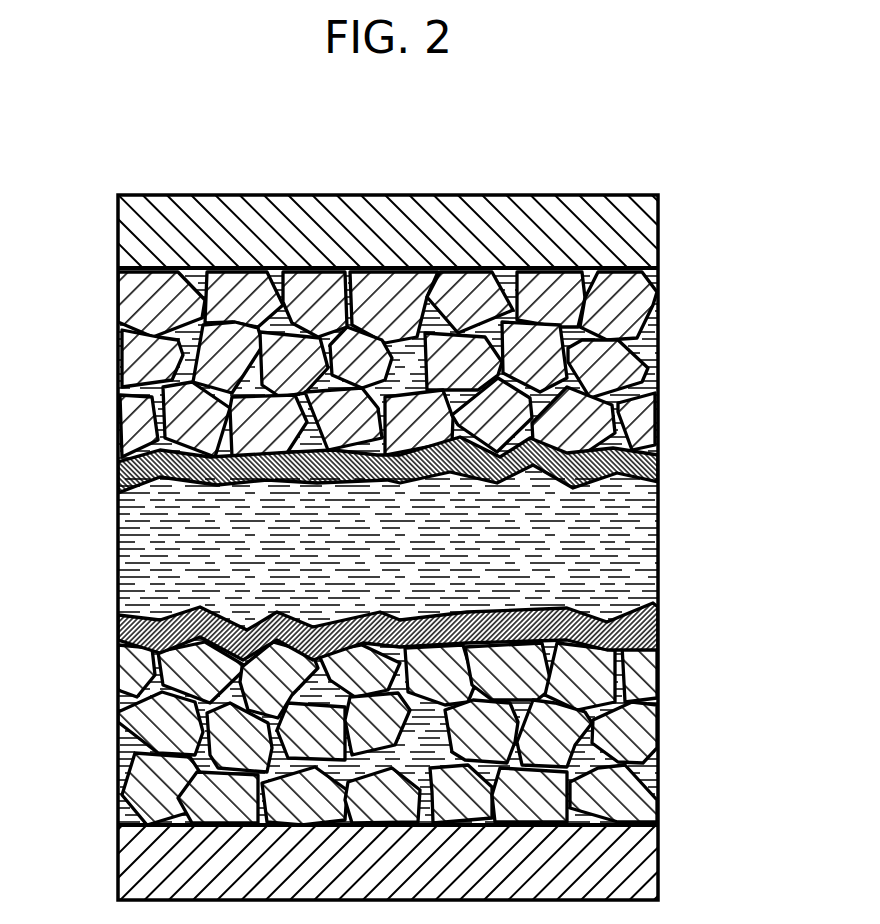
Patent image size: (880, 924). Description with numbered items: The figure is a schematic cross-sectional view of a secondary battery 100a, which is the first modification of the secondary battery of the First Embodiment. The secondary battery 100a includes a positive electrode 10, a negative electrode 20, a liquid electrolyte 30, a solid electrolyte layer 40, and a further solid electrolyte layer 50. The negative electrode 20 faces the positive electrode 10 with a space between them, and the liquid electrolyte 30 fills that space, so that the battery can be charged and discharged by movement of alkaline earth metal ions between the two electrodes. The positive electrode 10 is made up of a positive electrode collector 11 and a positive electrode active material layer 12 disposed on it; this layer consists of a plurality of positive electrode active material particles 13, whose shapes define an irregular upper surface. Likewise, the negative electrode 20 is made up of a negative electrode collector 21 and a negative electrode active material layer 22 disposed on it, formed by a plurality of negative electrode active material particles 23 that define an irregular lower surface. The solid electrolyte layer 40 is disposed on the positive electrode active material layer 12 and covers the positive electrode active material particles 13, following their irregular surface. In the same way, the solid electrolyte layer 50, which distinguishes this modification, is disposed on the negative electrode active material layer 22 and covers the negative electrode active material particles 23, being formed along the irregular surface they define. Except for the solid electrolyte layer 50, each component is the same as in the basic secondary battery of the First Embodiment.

The secondary battery 100a is at (411, 517).
The positive electrode 10 is at (411, 761).
The positive electrode collector 11 is at (389, 862).
The positive electrode active material layer 12 is at (381, 724).
The positive electrode active material particles 13 is at (130, 672).
The negative electrode 20 is at (411, 334).
The negative electrode collector 21 is at (630, 236).
The negative electrode active material layer 22 is at (381, 370).
The negative electrode active material particles 23 is at (140, 303).
The liquid electrolyte 30 is at (630, 533).
The solid electrolyte layer 40 is at (630, 623).
The solid electrolyte layer 50 is at (630, 468).